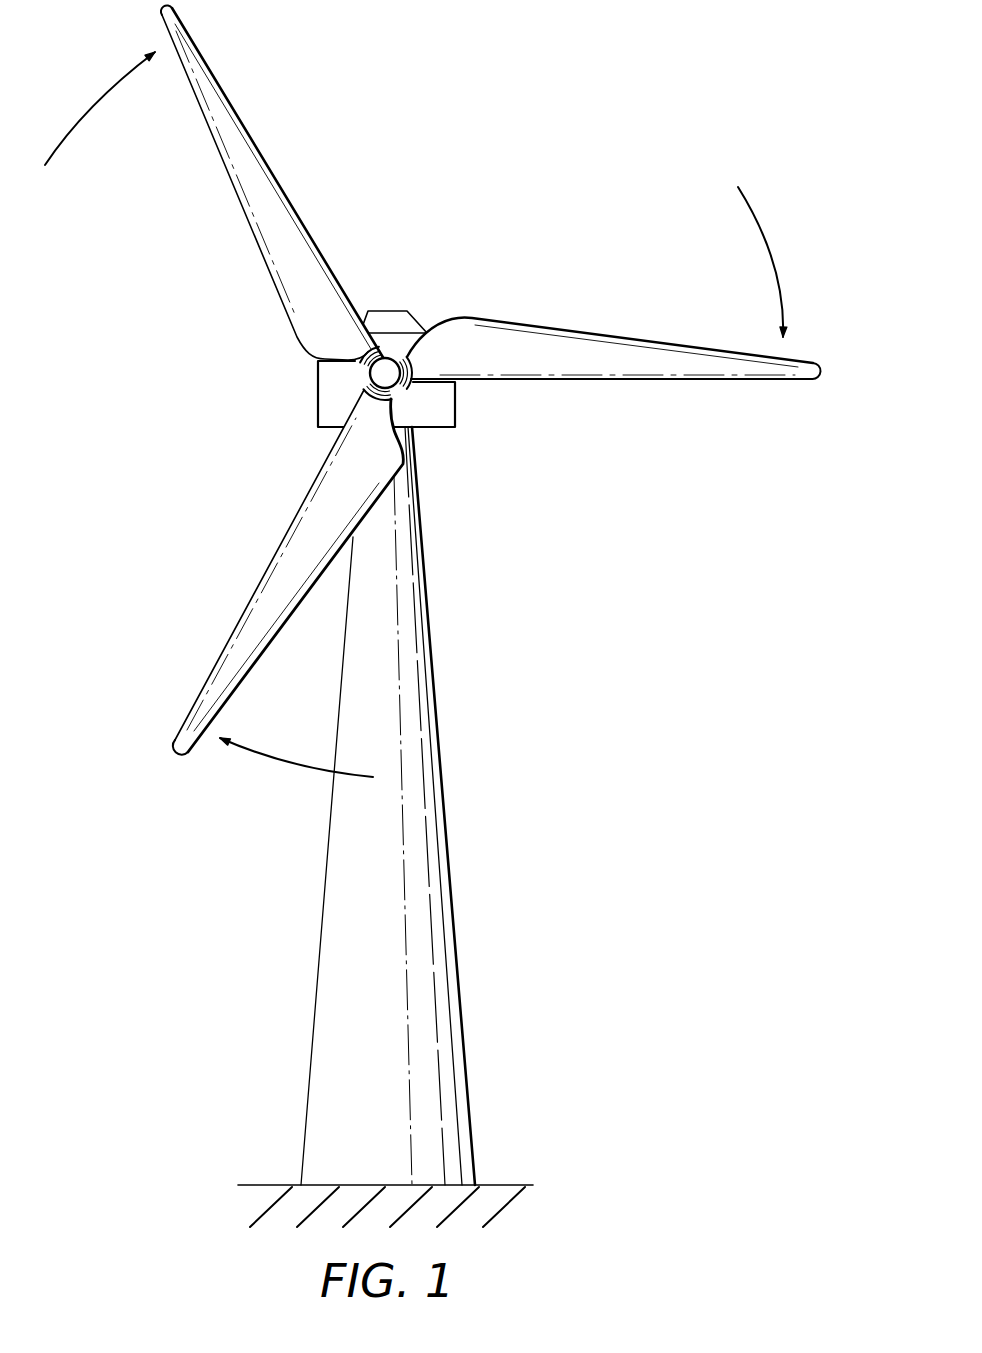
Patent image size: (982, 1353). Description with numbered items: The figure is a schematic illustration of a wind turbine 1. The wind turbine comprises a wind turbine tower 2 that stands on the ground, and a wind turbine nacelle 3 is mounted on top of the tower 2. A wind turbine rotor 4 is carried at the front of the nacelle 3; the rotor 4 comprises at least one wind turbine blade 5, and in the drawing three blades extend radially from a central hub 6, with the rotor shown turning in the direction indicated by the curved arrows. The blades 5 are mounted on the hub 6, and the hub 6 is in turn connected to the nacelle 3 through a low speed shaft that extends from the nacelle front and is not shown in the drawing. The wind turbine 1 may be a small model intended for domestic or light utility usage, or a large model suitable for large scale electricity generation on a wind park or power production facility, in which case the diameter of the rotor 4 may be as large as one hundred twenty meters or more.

The wind turbine 1 is at (433, 595).
The wind turbine tower 2 is at (443, 818).
The wind turbine nacelle 3 is at (448, 408).
The wind turbine rotor 4 is at (433, 391).
The wind turbine blade 5 is at (720, 363).
The hub 6 is at (388, 368).